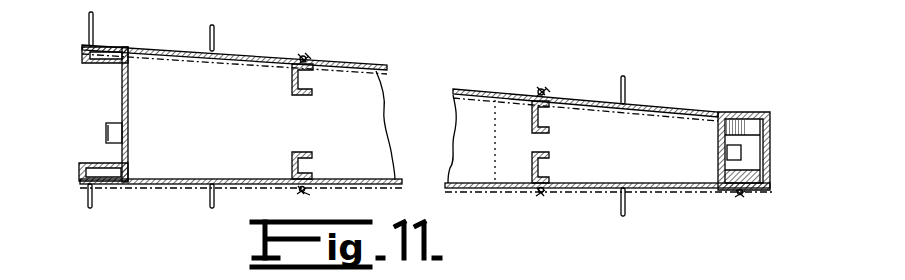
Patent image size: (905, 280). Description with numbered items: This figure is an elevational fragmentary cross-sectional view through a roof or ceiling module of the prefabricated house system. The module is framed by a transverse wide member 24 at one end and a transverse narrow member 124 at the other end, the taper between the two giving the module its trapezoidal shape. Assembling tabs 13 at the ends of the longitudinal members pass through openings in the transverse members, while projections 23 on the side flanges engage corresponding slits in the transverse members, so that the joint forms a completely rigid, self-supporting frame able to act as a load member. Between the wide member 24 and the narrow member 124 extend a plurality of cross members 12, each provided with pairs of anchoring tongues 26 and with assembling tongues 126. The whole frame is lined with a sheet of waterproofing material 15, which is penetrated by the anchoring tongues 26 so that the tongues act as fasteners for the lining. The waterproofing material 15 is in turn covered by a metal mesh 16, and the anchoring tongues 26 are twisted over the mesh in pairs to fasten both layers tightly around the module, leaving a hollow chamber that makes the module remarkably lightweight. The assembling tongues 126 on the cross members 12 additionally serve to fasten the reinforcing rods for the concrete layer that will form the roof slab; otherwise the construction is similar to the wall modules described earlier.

The cross member 12 is at (291, 172).
The assembling tab 13 is at (107, 134).
The waterproofing material 15 is at (356, 70).
The metal mesh 16 is at (364, 62).
The projection 23 is at (746, 130).
The transverse wide member 24 is at (128, 138).
The anchoring tongue 26 is at (306, 56).
The transverse narrow member 124 is at (717, 148).
The assembling tongue 126 is at (211, 32).